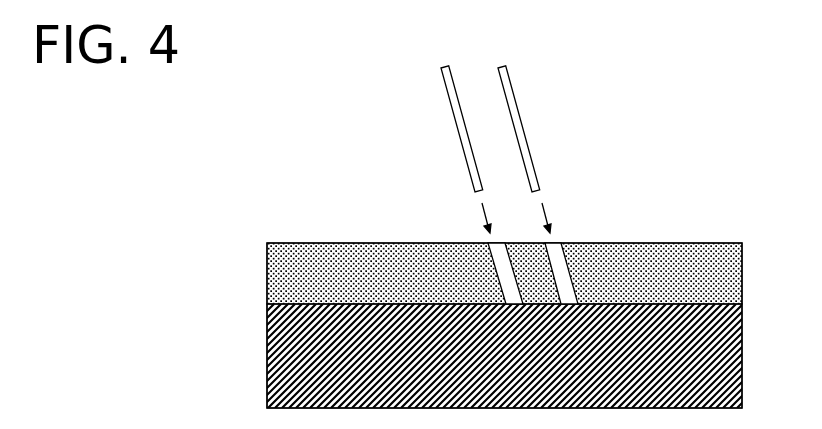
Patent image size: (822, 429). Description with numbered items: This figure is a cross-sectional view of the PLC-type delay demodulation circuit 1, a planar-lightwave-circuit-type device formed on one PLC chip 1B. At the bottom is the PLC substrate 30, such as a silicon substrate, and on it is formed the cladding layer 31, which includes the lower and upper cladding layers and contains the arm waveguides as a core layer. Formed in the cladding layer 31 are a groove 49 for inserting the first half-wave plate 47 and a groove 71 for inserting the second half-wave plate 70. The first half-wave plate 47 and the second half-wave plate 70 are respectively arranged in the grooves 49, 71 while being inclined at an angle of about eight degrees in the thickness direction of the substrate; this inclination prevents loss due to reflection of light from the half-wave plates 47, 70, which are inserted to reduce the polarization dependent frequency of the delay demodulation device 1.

The PLC-type delay demodulation circuit 1 is at (492, 299).
The PLC chip 1B is at (266, 276).
The PLC substrate 30 is at (740, 348).
The cladding layer 31 is at (733, 262).
The first half-wave plate 47 is at (452, 133).
The second half-wave plate 70 is at (527, 140).
The groove 49 is at (480, 243).
The groove 71 is at (568, 243).